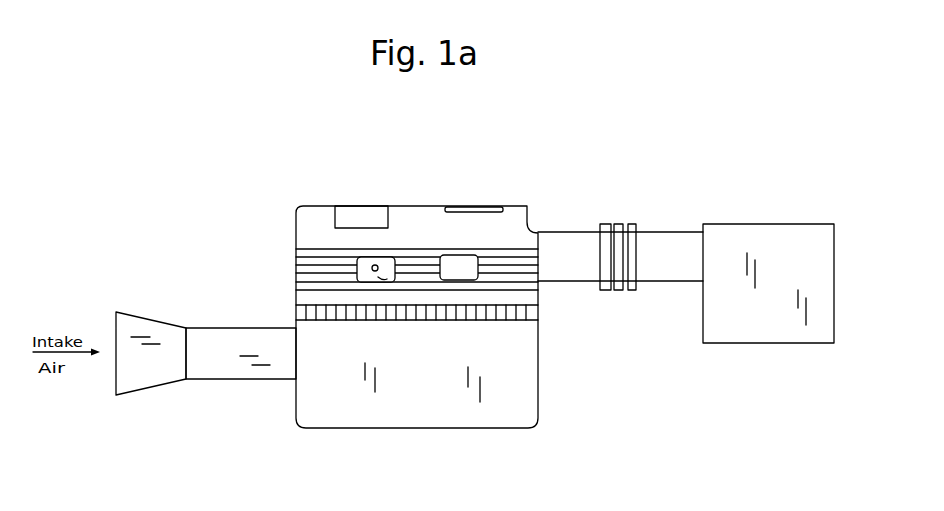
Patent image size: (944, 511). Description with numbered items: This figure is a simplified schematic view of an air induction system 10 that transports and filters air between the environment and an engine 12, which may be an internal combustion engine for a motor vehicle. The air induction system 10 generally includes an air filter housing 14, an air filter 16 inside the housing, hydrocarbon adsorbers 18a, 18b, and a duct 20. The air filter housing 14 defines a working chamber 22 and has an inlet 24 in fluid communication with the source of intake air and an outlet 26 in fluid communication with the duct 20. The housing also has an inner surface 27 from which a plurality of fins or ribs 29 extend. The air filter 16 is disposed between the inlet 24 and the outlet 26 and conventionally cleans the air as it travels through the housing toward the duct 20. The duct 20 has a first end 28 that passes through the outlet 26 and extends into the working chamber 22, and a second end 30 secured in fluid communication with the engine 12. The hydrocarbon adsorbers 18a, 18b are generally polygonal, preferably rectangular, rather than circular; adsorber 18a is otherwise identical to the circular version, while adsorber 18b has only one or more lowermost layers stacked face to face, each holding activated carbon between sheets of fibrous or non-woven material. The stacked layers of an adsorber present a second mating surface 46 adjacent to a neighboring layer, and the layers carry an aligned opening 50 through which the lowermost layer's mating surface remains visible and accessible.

The air induction system 10 is at (640, 156).
The engine 12 is at (775, 222).
The air filter housing 14 is at (303, 206).
The air filter 16 is at (515, 327).
The hydrocarbon adsorber 18a is at (397, 211).
The hydrocarbon adsorber 18b is at (460, 202).
The duct 20 is at (575, 231).
The working chamber 22 is at (335, 413).
The inlet 24 is at (116, 328).
The outlet 26 is at (538, 280).
The inner surface 27 is at (517, 408).
The first end 28 is at (527, 207).
The fins or ribs 29 is at (296, 278).
The second end 30 is at (705, 235).
The second mating surface 46 is at (375, 272).
The opening 50 is at (384, 283).